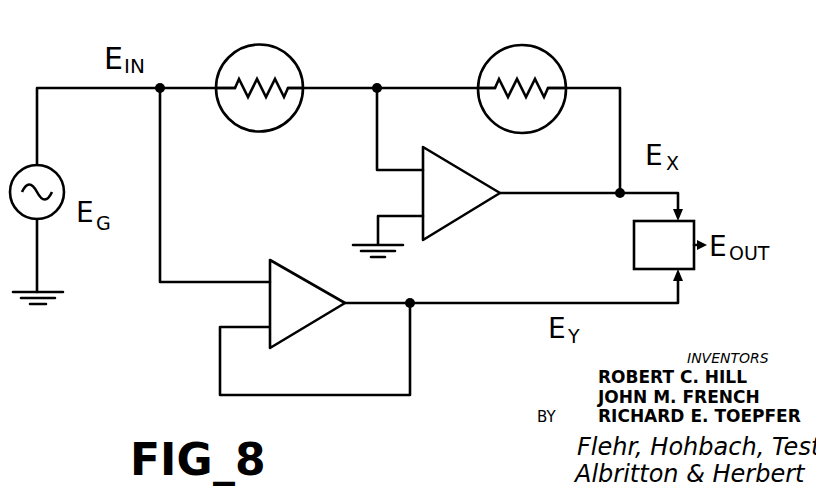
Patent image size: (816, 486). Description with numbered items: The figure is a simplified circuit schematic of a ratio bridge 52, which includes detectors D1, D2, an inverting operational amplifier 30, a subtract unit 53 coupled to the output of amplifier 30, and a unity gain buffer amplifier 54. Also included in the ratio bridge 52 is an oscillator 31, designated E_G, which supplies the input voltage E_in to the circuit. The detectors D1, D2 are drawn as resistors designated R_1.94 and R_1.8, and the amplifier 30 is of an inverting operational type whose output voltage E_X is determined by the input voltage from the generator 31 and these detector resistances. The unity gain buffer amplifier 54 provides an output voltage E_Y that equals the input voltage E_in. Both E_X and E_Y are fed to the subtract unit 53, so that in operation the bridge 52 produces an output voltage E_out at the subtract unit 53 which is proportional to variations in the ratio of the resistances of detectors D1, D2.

The oscillator 31 is at (57, 172).
The detector D2 is at (236, 56).
The detector D1 is at (560, 70).
The inverting operational amplifier 30 is at (463, 215).
The subtract unit 53 is at (633, 247).
The unity gain buffer amplifier 54 is at (303, 330).
The ratio bridge 52 is at (413, 271).